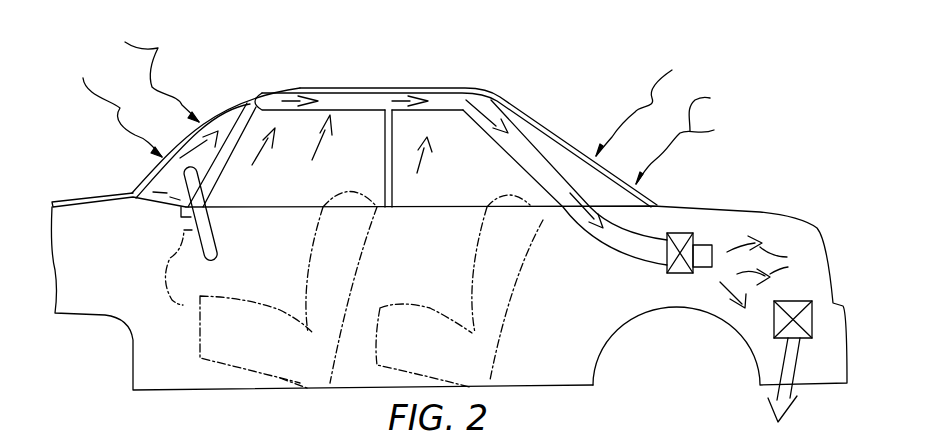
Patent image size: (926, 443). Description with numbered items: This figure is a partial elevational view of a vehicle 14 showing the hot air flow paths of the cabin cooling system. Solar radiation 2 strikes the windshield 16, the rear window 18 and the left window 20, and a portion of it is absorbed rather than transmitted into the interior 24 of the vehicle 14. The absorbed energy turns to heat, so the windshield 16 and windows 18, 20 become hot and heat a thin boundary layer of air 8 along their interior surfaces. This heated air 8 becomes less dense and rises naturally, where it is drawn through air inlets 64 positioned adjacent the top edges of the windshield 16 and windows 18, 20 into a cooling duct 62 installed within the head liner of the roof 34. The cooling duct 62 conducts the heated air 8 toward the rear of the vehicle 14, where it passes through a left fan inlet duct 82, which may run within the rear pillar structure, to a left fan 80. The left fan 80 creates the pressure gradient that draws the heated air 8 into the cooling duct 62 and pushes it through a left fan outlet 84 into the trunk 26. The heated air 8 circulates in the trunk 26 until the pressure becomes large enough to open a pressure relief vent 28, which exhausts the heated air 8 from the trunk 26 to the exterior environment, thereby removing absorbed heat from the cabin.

The solar radiation 2 is at (407, 109).
The air 8 is at (258, 158).
The vehicle 14 is at (109, 321).
The windshield 16 is at (132, 189).
The rear window 18 is at (552, 130).
The left window 20 is at (283, 213).
The interior 24 is at (428, 293).
The trunk 26 is at (740, 213).
The pressure relief vent 28 is at (815, 302).
The roof 34 is at (472, 88).
The cooling duct 62 is at (305, 88).
The air inlets 64 is at (353, 110).
The left fan 80 is at (677, 273).
The left fan inlet duct 82 is at (608, 242).
The left fan outlet 84 is at (703, 245).